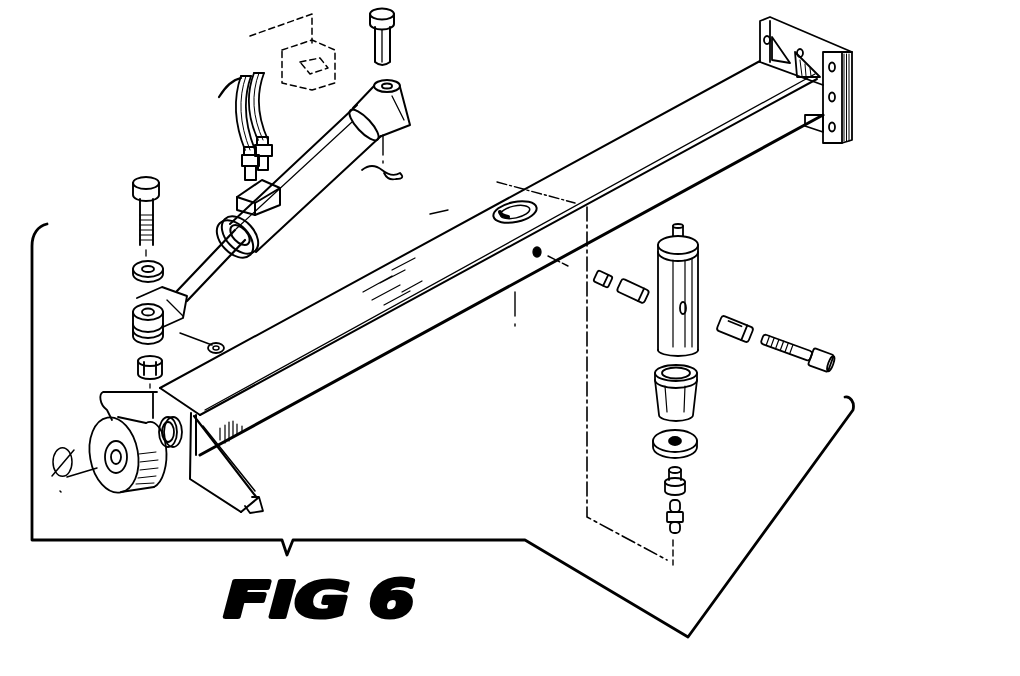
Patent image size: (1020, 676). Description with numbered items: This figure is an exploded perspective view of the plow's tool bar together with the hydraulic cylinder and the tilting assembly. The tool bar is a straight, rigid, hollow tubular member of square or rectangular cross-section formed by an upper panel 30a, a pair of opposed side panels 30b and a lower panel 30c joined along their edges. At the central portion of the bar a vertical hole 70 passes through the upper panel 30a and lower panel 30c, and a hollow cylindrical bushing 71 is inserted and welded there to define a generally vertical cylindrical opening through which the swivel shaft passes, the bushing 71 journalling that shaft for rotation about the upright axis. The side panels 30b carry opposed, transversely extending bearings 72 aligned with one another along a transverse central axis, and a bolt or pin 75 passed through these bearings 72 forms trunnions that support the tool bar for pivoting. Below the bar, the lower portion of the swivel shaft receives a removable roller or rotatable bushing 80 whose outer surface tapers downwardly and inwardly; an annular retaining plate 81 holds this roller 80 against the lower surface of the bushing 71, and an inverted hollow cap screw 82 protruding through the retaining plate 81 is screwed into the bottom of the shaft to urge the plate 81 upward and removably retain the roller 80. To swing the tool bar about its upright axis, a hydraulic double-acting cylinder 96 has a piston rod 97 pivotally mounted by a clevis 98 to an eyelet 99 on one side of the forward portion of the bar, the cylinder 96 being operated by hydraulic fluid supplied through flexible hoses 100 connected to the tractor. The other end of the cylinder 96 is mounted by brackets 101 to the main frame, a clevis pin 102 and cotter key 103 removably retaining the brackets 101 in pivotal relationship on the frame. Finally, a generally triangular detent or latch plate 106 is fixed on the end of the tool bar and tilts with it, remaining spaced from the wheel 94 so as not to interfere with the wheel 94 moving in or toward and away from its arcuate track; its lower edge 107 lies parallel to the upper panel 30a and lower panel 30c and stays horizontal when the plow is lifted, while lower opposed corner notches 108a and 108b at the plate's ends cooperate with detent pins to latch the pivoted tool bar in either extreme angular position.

The upper panel 30a is at (676, 102).
The side panels 30b is at (752, 146).
The lower panel 30c is at (348, 386).
The vertical hole 70 is at (492, 222).
The hollow cylindrical bushing 71 is at (522, 202).
The bearings 72 is at (636, 300).
The bolt or pin 75 is at (793, 345).
The roller or rotatable bushing 80 is at (700, 396).
The annular retaining plate 81 is at (700, 444).
The hollow cap screw 82 is at (696, 488).
The wheel 94 is at (125, 482).
The hydraulic double-acting cylinder 96 is at (270, 238).
The piston rod 97 is at (226, 262).
The clevis 98 is at (135, 302).
The eyelet 99 is at (246, 312).
The flexible hoses 100 is at (219, 97).
The brackets 101 is at (406, 87).
The clevis pin 102 is at (398, 25).
The cotter key 103 is at (393, 165).
The detent or latch plate 106 is at (246, 452).
The lower edge 107 is at (208, 489).
The corner notch 108a is at (105, 393).
The corner notch 108b is at (261, 502).